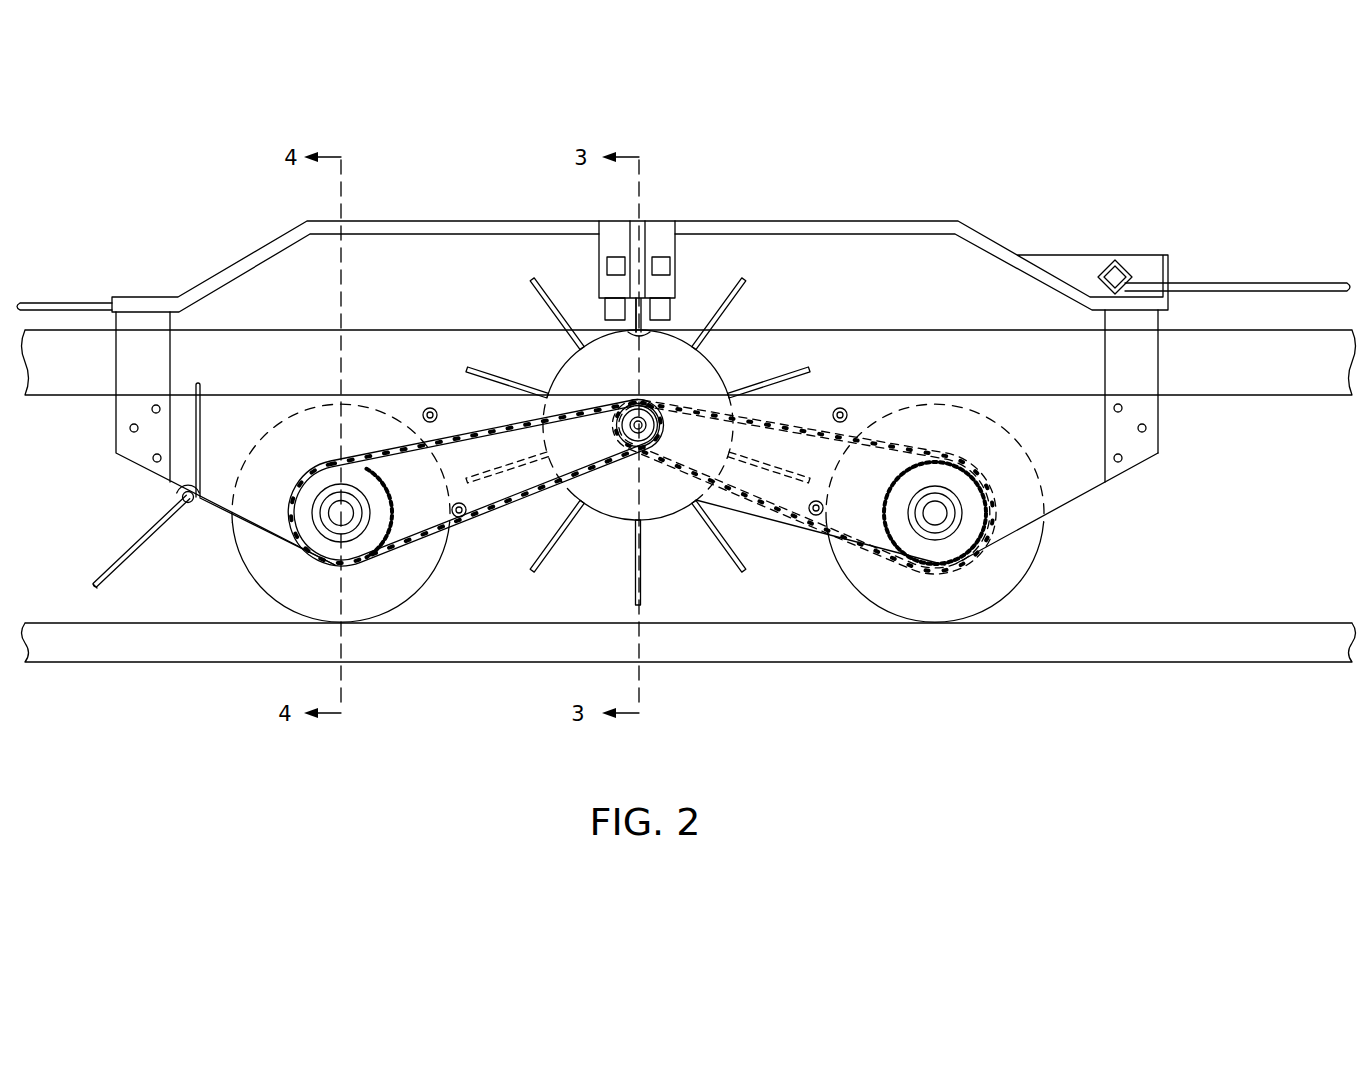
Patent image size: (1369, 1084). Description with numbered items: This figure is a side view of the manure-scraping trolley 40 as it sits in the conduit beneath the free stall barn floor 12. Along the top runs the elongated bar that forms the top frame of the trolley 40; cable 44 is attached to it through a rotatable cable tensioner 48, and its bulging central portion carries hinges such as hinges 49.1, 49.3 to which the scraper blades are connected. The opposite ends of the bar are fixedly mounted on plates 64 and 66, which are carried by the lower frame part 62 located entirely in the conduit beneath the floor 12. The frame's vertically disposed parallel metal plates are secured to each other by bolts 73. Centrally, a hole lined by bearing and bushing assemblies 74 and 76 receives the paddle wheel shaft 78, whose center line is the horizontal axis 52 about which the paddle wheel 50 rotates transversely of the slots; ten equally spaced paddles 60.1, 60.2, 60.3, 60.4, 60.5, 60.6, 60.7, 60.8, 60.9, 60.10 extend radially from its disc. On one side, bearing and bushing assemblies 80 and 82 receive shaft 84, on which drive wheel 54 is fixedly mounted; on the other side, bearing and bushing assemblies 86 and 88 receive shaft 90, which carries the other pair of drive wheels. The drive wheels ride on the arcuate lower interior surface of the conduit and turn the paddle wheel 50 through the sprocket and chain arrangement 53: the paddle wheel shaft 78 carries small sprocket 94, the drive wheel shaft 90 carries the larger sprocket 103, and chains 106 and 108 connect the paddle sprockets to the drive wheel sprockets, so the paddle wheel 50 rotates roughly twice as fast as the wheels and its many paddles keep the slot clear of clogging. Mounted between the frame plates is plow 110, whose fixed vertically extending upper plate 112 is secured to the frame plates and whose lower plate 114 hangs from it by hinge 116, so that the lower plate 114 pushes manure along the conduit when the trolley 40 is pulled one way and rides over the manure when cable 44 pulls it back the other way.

The free stall barn floor 12 is at (1274, 330).
The trolley 40 is at (716, 588).
The cable 44 is at (1262, 285).
The rotatable cable tensioner 48 is at (1125, 265).
The hinge 49.1 is at (604, 268).
The hinge 49.3 is at (668, 266).
The paddle wheel 50 is at (710, 366).
The horizontal axis 52 is at (575, 371).
The sprocket and chain arrangement 53 is at (972, 458).
The drive wheel 54 is at (250, 547).
The paddle 60.1 is at (690, 321).
The paddle 60.2 is at (744, 297).
The paddle 60.3 is at (802, 370).
The paddle 60.4 is at (770, 470).
The paddle 60.5 is at (740, 553).
The paddle 60.6 is at (642, 598).
The paddle 60.7 is at (550, 560).
The paddle 60.8 is at (508, 468).
The paddle 60.9 is at (478, 358).
The paddle 60.10 is at (538, 286).
The lower frame part 62 is at (1084, 493).
The plate 64 is at (126, 353).
The plate 66 is at (1159, 358).
The bolt 73 is at (423, 412).
The bearing and bushing assembly 74 is at (650, 412).
The bearing and bushing assembly 76 is at (661, 436).
The paddle wheel shaft 78 is at (632, 410).
The bearing and bushing assembly 80 is at (330, 513).
The bearing and bushing assembly 82 is at (326, 493).
The shaft 84 is at (363, 478).
The bearing and bushing assembly 86 is at (960, 513).
The bearing and bushing assembly 88 is at (935, 487).
The shaft 90 is at (943, 522).
The sprocket 94 is at (471, 425).
The sprocket 103 is at (893, 532).
The chain 106 is at (460, 432).
The chain 108 is at (893, 396).
The plow 110 is at (112, 560).
The upper plate 112 is at (201, 425).
The lower plate 114 is at (97, 587).
The hinge 116 is at (183, 501).